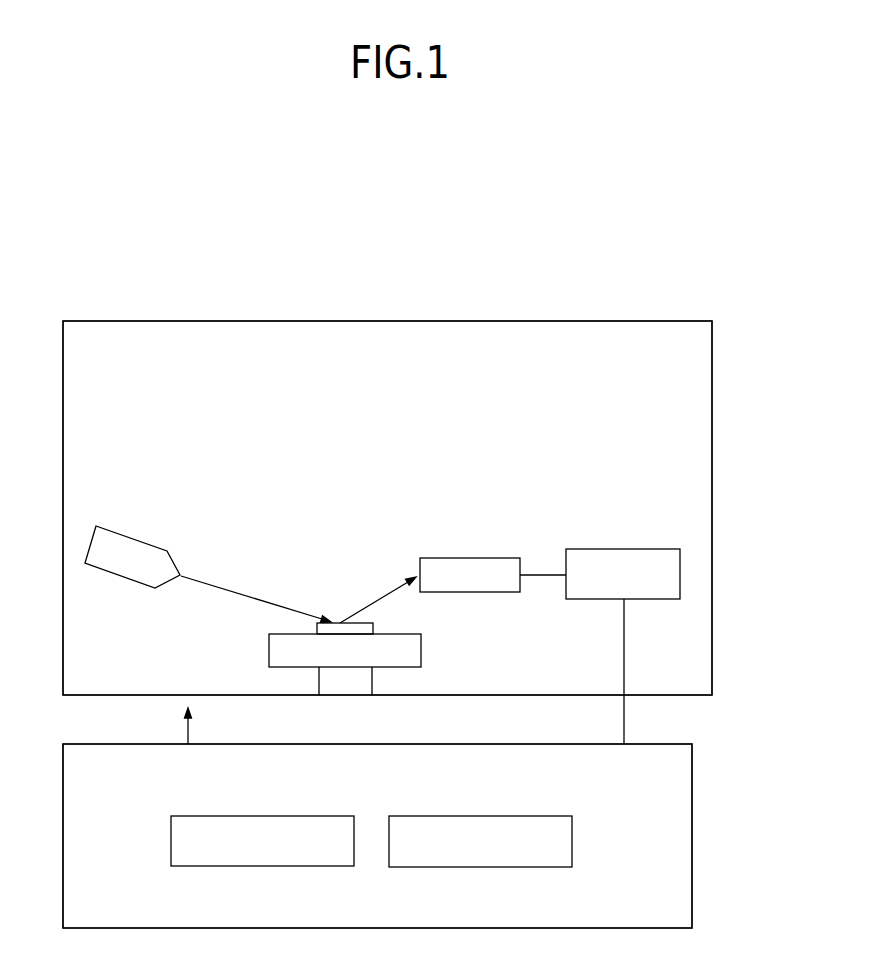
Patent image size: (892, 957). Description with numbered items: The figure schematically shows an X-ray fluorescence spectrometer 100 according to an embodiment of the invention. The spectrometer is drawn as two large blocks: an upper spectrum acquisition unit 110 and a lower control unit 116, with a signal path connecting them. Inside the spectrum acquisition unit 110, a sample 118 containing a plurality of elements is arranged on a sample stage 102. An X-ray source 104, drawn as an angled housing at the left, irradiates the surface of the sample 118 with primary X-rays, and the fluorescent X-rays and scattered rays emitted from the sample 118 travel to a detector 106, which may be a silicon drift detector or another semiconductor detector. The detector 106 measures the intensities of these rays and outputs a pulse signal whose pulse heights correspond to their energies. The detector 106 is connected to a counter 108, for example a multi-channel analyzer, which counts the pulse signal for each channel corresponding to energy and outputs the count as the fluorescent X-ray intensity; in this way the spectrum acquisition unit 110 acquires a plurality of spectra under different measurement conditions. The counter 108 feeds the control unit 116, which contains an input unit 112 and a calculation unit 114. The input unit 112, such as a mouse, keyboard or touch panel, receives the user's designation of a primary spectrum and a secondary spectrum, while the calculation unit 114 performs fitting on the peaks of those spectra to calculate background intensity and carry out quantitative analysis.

The X-ray fluorescence spectrometer 100 is at (377, 242).
The sample stage 102 is at (268, 648).
The X-ray source 104 is at (130, 536).
The detector 106 is at (486, 558).
The counter 108 is at (623, 549).
The spectrum acquisition unit 110 is at (713, 503).
The input unit 112 is at (262, 815).
The calculation unit 114 is at (486, 816).
The control unit 116 is at (693, 803).
The sample 118 is at (335, 622).